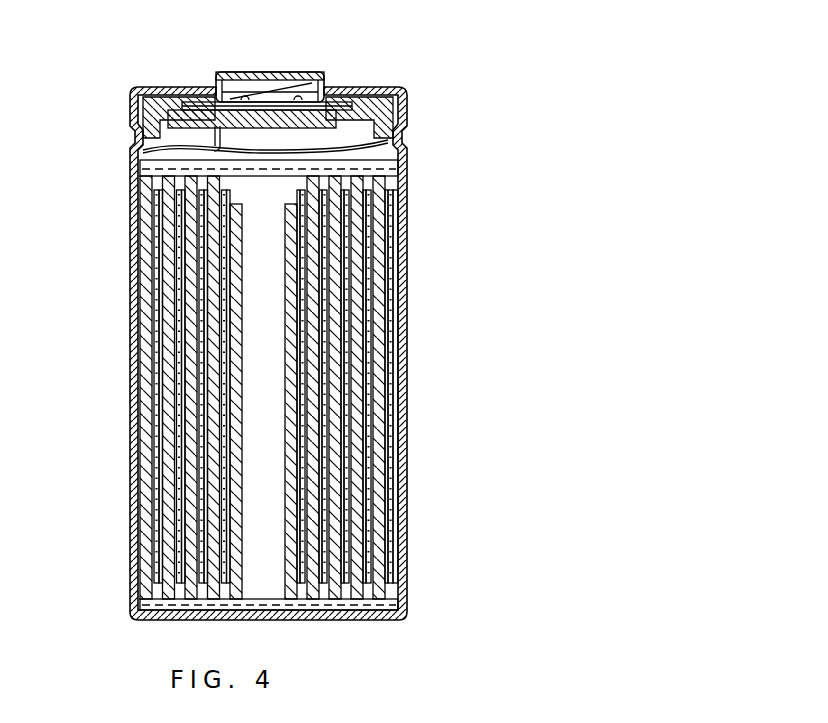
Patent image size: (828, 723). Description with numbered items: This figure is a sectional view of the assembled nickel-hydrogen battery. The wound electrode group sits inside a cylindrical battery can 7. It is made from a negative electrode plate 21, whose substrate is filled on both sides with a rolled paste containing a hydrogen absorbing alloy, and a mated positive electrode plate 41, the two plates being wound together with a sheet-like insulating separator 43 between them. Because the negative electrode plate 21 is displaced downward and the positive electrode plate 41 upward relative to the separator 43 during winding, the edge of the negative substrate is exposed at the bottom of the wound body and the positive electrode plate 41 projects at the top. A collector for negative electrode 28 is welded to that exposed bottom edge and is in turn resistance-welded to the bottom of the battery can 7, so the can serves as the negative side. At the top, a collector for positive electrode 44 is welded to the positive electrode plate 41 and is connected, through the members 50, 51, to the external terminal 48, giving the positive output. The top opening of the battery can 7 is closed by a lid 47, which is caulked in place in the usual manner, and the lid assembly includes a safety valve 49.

The battery can 7 is at (407, 425).
The negative electrode plate 21 is at (236, 405).
The collector for negative electrode 28 is at (396, 612).
The positive electrode plate 41 is at (218, 545).
The separator 43 is at (208, 480).
The collector for positive electrode 44 is at (400, 182).
The lid 47 is at (219, 72).
The external terminal 48 is at (288, 72).
The safety valve 49 is at (316, 84).
The member 50 is at (143, 153).
The member 51 is at (410, 140).